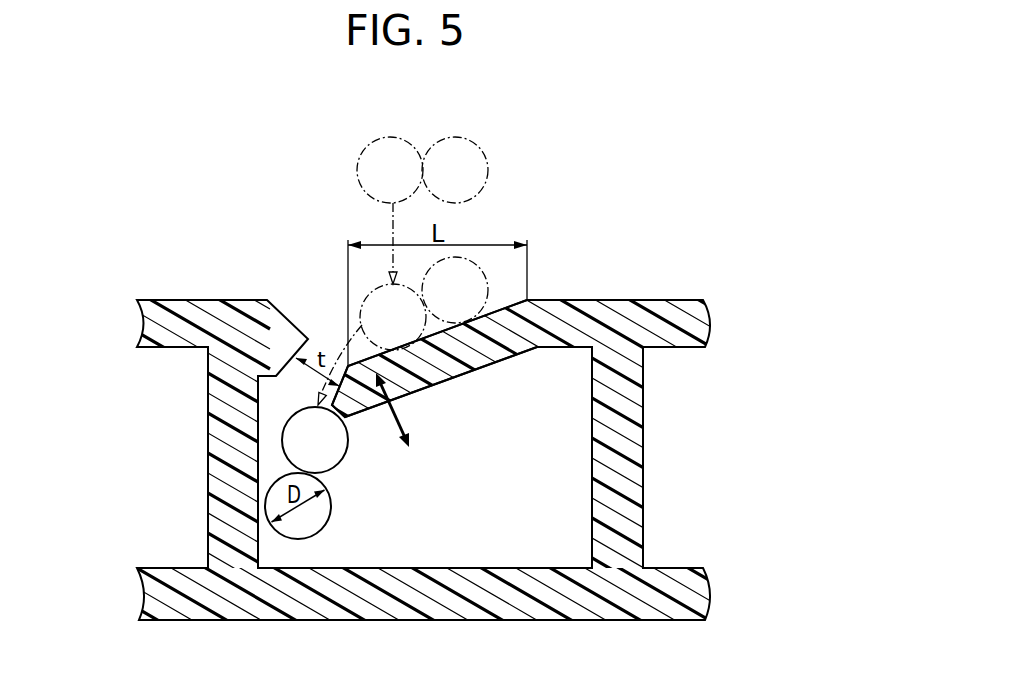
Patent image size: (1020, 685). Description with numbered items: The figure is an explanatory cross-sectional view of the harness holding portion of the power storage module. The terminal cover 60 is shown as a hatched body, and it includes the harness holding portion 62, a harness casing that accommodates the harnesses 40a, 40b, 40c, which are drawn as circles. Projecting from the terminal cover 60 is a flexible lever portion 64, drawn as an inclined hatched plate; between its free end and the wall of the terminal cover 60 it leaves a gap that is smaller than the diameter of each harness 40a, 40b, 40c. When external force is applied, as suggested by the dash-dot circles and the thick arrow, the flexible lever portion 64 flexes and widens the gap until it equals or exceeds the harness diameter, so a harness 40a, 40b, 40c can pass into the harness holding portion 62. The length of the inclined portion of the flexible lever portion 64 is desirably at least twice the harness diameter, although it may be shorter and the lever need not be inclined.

The harness 40a is at (348, 309).
The harness 40b is at (376, 338).
The harness 40c is at (432, 143).
The terminal cover 60 is at (569, 272).
The harness holding portion 62 is at (572, 420).
The flexible lever portion 64 is at (463, 368).